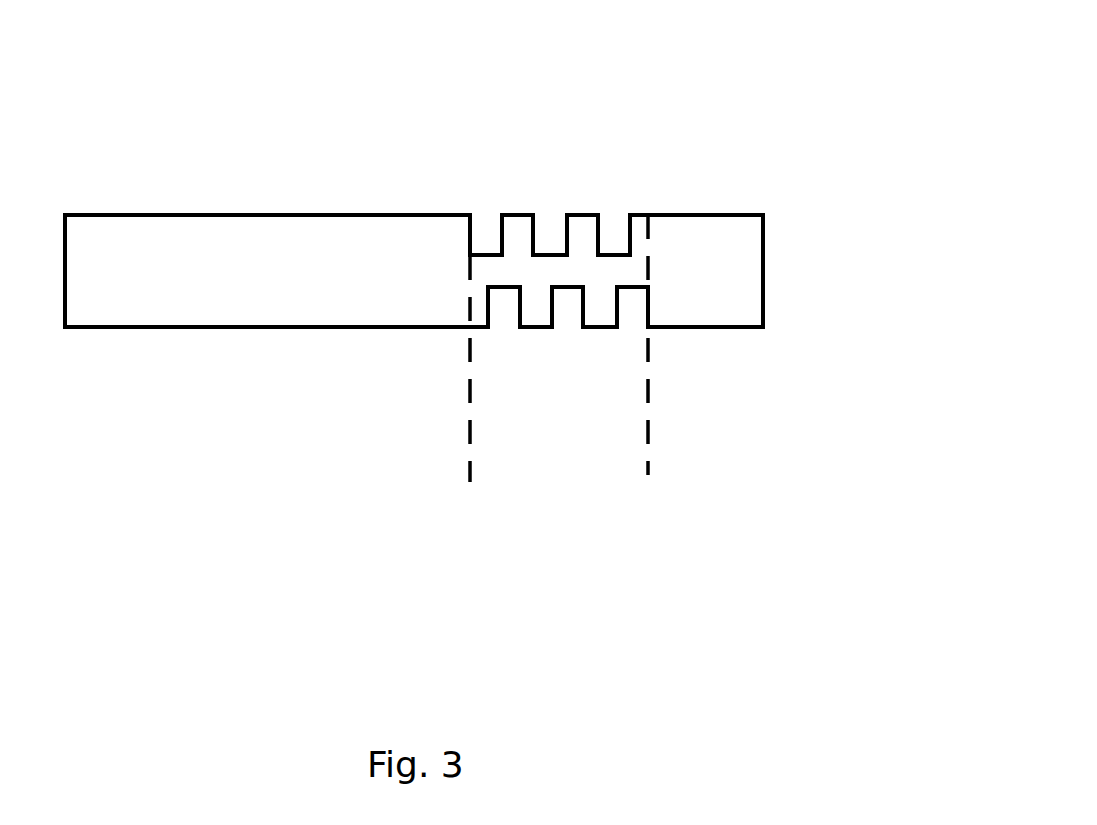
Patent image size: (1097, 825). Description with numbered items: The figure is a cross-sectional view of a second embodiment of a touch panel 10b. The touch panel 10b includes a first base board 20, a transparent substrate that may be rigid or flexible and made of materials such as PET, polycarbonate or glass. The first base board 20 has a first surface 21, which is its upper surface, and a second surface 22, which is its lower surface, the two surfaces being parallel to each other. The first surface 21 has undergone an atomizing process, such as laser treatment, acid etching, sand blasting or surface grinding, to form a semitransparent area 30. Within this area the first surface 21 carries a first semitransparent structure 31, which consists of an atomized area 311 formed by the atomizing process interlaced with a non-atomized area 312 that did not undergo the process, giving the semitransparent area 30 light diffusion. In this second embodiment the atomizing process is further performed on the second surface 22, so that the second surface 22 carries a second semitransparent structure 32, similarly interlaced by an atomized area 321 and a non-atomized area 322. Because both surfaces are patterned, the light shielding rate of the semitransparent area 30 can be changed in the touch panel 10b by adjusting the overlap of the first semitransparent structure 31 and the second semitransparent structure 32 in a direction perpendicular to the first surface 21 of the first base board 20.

The touch panel 10b is at (720, 76).
The first base board 20 is at (748, 281).
The first surface 21 is at (174, 210).
The second surface 22 is at (129, 334).
The semitransparent area 30 is at (645, 458).
The first semitransparent structure 31 is at (500, 102).
The atomized area 311 is at (485, 222).
The non-atomized area 312 is at (519, 208).
The second semitransparent structure 32 is at (388, 345).
The atomized area 321 is at (505, 316).
The non-atomized area 322 is at (535, 338).